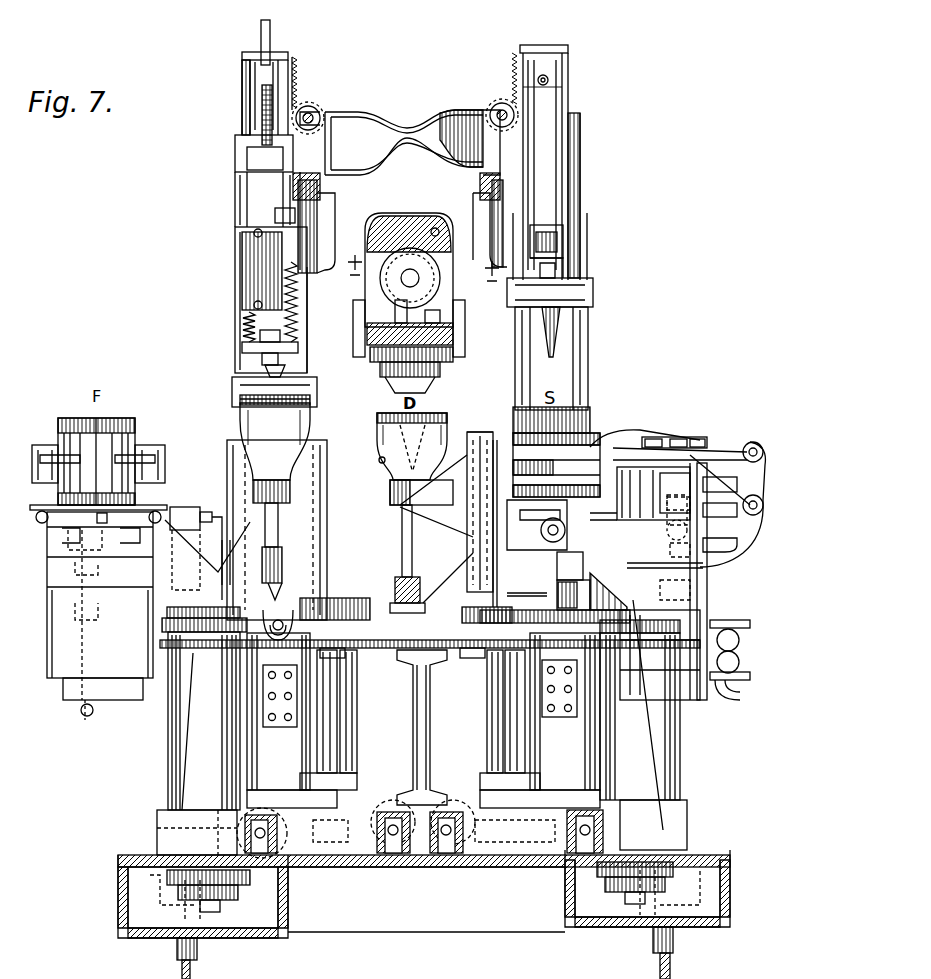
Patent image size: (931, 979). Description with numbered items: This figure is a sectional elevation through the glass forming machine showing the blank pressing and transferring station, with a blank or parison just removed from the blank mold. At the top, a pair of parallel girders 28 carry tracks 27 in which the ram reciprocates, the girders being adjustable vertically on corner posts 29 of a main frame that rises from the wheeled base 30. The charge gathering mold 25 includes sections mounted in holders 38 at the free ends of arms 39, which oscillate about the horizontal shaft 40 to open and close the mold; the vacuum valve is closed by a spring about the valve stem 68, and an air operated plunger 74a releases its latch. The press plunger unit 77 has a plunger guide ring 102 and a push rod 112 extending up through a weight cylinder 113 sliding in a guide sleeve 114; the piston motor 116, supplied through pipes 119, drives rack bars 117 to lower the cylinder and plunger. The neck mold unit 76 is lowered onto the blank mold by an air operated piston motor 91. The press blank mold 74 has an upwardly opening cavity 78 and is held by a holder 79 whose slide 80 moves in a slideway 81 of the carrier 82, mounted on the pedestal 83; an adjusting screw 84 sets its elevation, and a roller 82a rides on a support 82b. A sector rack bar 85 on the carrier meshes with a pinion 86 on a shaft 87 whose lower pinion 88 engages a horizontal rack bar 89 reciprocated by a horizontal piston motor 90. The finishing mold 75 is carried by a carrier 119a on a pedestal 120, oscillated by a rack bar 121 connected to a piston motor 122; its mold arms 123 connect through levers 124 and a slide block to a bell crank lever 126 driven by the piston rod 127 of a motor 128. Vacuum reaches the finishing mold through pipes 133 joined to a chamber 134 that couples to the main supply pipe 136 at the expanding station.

The push rod 112 is at (262, 38).
The corner posts 29 is at (272, 57).
The weight cylinder 113 is at (244, 100).
The rack bars 117 is at (262, 105).
The guide sleeve 114 is at (248, 148).
The press plunger unit 77 is at (224, 252).
The piston motor 116 is at (258, 278).
The pipes 119 is at (254, 305).
The plunger guide ring 102 is at (292, 352).
The neck mold unit 76 is at (325, 396).
The finishing mold 75 is at (136, 425).
The mold arms 123 is at (182, 445).
The pipes 133 is at (188, 492).
The chamber 134 is at (190, 512).
The main supply pipe 136 is at (218, 560).
The carrier 119a is at (55, 605).
The motor 128 is at (85, 722).
The pedestal 120 is at (176, 782).
The press blank mold 74 is at (232, 437).
The slide 80 is at (318, 480).
The air operated plunger 74a is at (379, 463).
The adjusting screw 84 is at (400, 548).
The cavity 78 is at (380, 430).
The holder 79 is at (392, 498).
The slideway 81 is at (483, 432).
The roller 82a is at (425, 612).
The sector rack bar 85 is at (524, 596).
The carrier 82 is at (555, 587).
The levers 124 is at (690, 435).
The bell crank lever 126 is at (765, 466).
The piston rod 127 is at (665, 590).
The pinion 86 is at (352, 612).
The shaft 87 is at (347, 727).
The pedestal 83 is at (540, 742).
The support 82b is at (382, 647).
The horizontal piston motor 90 is at (396, 803).
The horizontal rack bar 89 is at (392, 858).
The piston motor 122 is at (575, 830).
The wheeled base 30 is at (355, 870).
The pinion 88 is at (324, 868).
The rack bar 121 is at (262, 853).
The valve stem 68 is at (433, 228).
The horizontal shaft 40 is at (420, 278).
The arms 39 is at (356, 330).
The holders 38 is at (458, 364).
The charge gathering mold 25 is at (452, 394).
The tracks 27 is at (318, 205).
The girders 28 is at (330, 230).
The air operated piston motor 91 is at (545, 103).